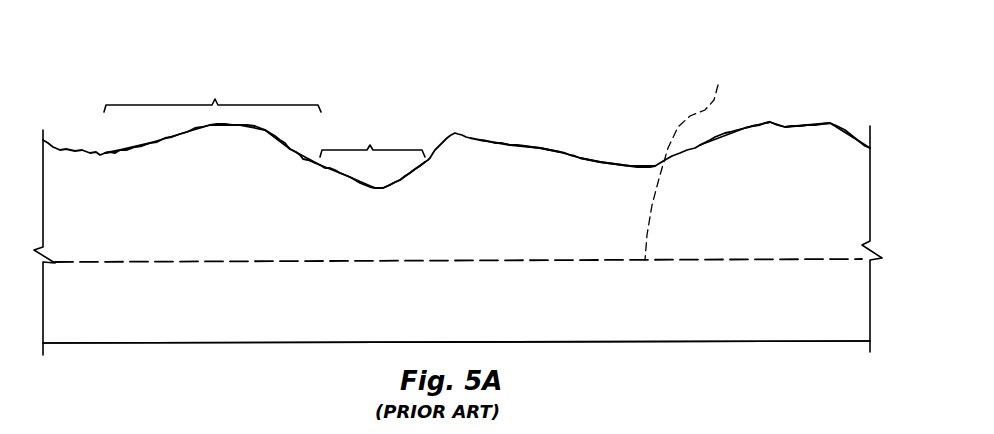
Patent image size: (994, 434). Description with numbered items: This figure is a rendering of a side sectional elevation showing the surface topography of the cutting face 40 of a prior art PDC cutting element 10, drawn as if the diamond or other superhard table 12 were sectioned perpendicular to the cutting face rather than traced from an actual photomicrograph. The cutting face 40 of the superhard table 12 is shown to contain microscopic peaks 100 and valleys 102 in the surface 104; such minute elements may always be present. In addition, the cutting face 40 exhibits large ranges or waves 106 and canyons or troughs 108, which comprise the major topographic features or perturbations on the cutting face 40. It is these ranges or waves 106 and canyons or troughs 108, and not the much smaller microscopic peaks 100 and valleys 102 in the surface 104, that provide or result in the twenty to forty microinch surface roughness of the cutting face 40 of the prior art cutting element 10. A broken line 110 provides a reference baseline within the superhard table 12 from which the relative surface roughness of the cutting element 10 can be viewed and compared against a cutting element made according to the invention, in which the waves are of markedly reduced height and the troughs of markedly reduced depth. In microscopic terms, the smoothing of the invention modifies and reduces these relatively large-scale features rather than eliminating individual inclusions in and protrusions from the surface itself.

The prior art PDC cutting element 10 is at (368, 100).
The cutting face 40 is at (478, 115).
The surface 104 is at (533, 150).
The peaks 100 is at (592, 155).
The broken line 110 is at (690, 161).
The valleys 102 is at (785, 129).
The ranges or waves 106 is at (212, 121).
The canyons or troughs 108 is at (372, 155).
The superhard table 12 is at (472, 313).